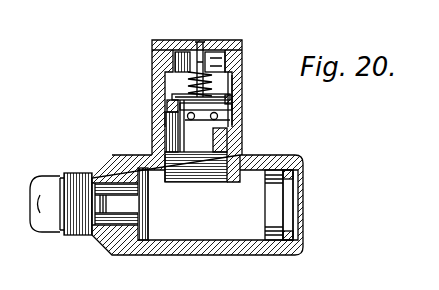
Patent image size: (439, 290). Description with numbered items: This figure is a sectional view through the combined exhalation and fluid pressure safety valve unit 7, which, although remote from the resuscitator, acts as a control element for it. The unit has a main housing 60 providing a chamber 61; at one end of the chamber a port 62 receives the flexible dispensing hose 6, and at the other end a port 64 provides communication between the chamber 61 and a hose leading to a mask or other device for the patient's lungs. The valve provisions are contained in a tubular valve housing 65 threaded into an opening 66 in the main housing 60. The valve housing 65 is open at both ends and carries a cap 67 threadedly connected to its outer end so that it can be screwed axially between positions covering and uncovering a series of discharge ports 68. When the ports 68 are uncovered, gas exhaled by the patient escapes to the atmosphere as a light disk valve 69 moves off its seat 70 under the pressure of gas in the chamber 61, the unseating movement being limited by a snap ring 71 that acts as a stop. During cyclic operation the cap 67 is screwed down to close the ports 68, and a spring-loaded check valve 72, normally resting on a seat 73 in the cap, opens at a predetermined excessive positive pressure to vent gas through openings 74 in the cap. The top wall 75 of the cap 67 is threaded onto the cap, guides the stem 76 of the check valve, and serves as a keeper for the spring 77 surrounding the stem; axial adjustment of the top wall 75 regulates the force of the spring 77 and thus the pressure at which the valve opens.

The flexible dispensing hose 6 is at (46, 182).
The exhalation valve unit 7 is at (118, 117).
The main housing 60 is at (180, 256).
The chamber 61 is at (179, 204).
The port 62 is at (118, 241).
The port 64 is at (300, 241).
The tubular valve housing 65 is at (241, 135).
The opening 66 is at (212, 184).
The cap 67 is at (243, 60).
The discharge ports 68 is at (238, 118).
The disk valve 69 is at (170, 108).
The seat 70 is at (166, 134).
The snap ring 71 is at (234, 108).
The spring-loaded check valve 72 is at (231, 95).
The seat 73 is at (172, 90).
The openings 74 is at (168, 72).
The top wall 75 is at (172, 40).
The stem 76 is at (199, 40).
The spring 77 is at (226, 46).